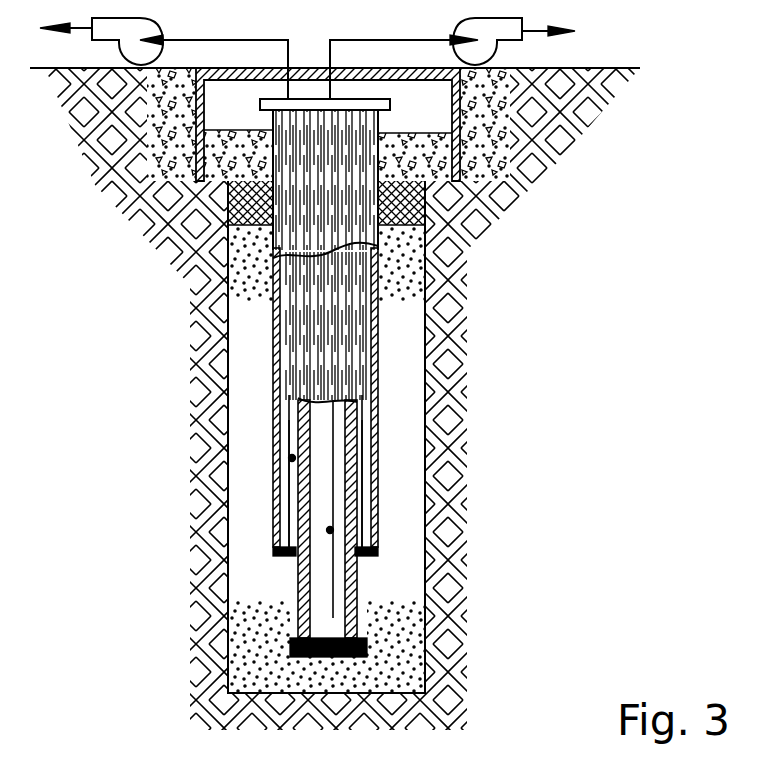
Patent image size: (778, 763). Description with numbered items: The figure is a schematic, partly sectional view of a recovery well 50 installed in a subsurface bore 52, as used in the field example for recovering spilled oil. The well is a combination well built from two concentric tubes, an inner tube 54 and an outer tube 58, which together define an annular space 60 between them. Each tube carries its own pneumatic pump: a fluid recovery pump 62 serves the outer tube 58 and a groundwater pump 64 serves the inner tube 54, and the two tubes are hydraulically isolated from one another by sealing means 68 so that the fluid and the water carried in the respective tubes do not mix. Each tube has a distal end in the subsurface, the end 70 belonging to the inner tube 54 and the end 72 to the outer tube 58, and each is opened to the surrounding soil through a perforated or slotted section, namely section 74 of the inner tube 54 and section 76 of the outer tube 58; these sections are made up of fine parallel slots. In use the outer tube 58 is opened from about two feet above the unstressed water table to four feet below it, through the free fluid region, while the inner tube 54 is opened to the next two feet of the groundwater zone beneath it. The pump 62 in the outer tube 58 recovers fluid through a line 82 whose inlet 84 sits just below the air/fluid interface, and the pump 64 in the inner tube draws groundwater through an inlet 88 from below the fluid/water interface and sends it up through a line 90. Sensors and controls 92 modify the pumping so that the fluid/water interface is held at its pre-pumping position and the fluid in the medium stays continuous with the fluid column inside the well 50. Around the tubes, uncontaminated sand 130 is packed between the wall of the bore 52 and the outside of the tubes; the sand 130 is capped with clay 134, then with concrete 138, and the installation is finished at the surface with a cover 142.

The recovery well 50 is at (264, 320).
The bore 52 is at (427, 345).
The inner tube 54 is at (355, 452).
The outer tube 58 is at (380, 428).
The annular space 60 is at (360, 387).
The fluid recovery pump 62 is at (124, 46).
The groundwater pump 64 is at (498, 48).
The sealing means 68 is at (275, 551).
The distal end of inner tube 70 is at (367, 647).
The distal end of outer tube 72 is at (277, 535).
The perforated section of inner tube 74 is at (360, 593).
The perforated section of outer tube 76 is at (385, 493).
The line 82 is at (285, 38).
The inlet 84 is at (290, 495).
The inlet 88 is at (333, 617).
The line 90 is at (332, 38).
The sensors and controls 92 is at (292, 458).
The uncontaminated sand 130 is at (400, 272).
The clay 134 is at (410, 203).
The concrete 138 is at (437, 156).
The cover 142 is at (460, 125).